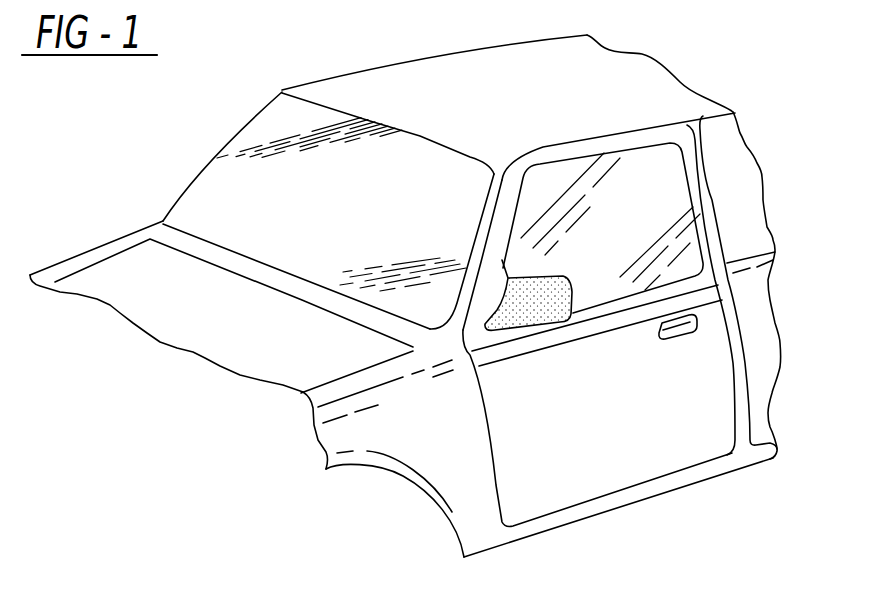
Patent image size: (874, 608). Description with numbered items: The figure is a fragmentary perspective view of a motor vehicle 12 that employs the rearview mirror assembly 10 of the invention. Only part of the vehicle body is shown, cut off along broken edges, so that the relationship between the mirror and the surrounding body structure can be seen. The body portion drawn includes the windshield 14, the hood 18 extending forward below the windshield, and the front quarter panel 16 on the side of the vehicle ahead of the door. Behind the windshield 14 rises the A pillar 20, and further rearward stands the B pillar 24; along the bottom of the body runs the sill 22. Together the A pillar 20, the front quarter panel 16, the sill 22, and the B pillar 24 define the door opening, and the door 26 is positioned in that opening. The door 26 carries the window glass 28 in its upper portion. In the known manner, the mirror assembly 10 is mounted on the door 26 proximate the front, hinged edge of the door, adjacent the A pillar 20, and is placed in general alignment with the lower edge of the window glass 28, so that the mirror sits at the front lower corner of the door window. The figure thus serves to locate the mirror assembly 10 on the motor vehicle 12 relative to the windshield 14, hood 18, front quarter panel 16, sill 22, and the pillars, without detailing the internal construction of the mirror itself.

The rearview mirror assembly 10 is at (566, 260).
The motor vehicle 12 is at (248, 78).
The windshield 14 is at (348, 209).
The front quarter panel 16 is at (448, 439).
The hood 18 is at (248, 332).
The A pillar 20 is at (483, 232).
The sill 22 is at (623, 497).
The B pillar 24 is at (710, 207).
The door 26 is at (690, 359).
The window glass 28 is at (657, 188).